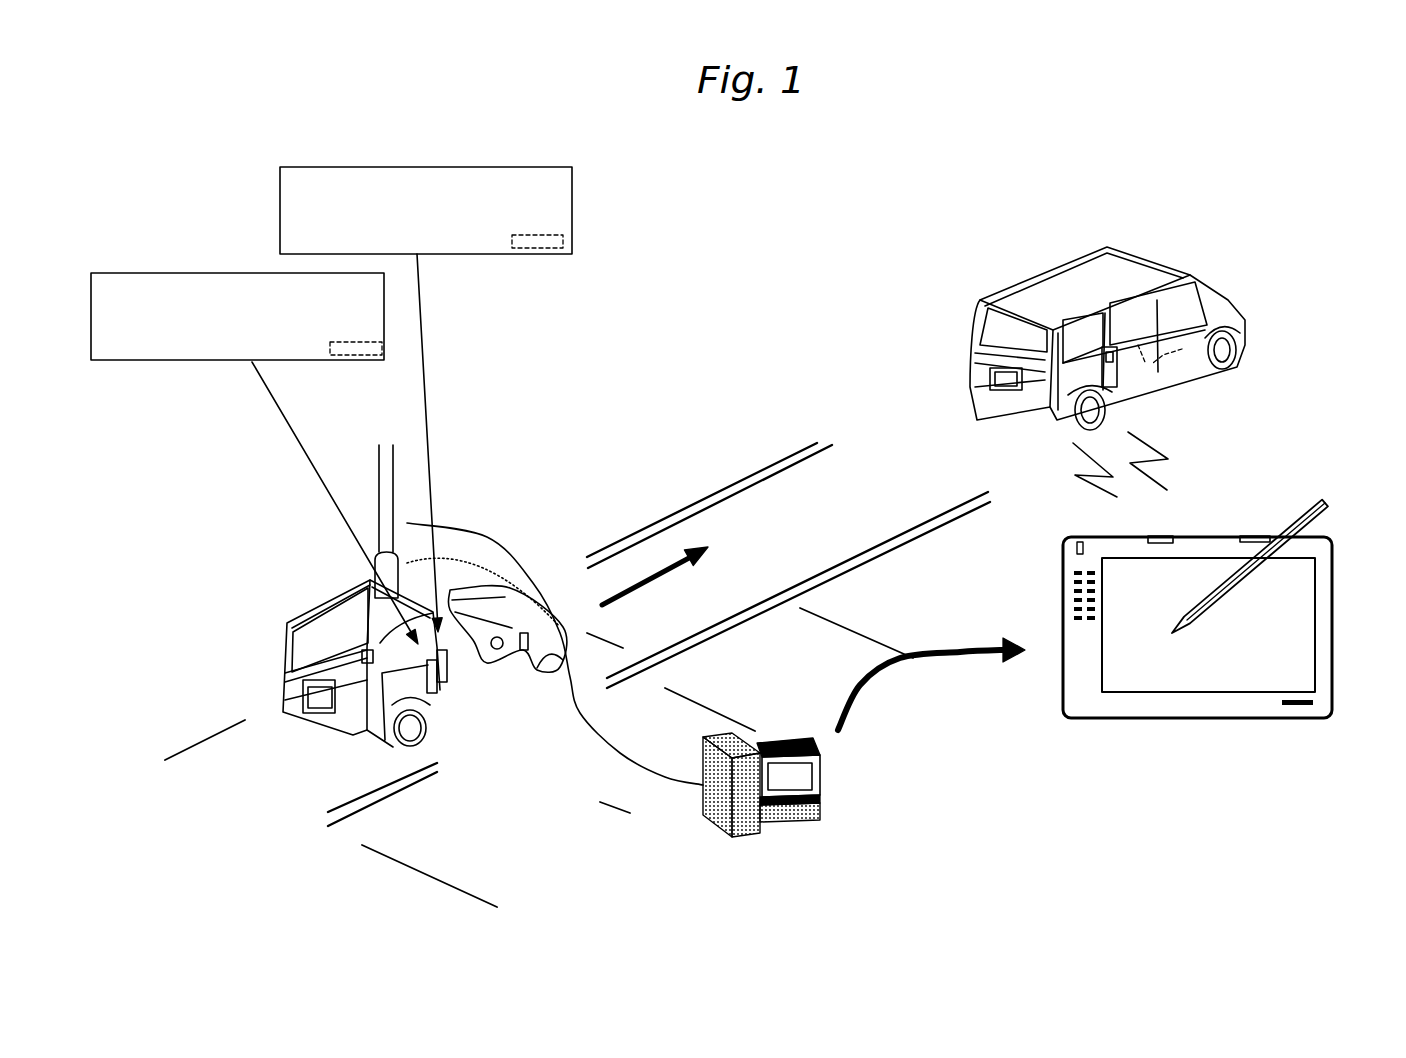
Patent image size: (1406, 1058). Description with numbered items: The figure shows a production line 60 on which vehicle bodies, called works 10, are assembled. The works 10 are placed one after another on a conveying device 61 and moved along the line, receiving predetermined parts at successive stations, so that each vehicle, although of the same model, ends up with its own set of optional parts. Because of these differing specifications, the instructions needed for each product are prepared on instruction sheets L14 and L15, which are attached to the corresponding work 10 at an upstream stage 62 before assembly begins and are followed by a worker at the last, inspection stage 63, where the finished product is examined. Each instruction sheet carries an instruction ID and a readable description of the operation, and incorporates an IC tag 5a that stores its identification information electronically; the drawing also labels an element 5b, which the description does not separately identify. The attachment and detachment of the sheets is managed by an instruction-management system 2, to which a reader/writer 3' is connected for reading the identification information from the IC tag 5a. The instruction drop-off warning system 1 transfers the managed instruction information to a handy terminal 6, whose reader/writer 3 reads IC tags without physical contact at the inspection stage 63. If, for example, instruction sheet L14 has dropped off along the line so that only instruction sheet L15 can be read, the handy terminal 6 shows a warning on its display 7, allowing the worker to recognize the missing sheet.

The instruction drop-off warning system 1 is at (1085, 790).
The instruction-management system 2 is at (773, 737).
The reader/writer 3 is at (1155, 623).
The reader/writer 3' is at (342, 521).
The IC tag 5a is at (516, 253).
The identification tag 5b is at (353, 732).
The handy terminal 6 is at (1322, 545).
The display 7 is at (1168, 667).
The work 10 is at (297, 612).
The production line 60 is at (665, 395).
The conveying device 61 is at (728, 513).
The upstream stage 62 is at (298, 787).
The inspection stage 63 is at (1230, 423).
The instruction sheet L14 is at (168, 280).
The instruction sheet L15 is at (385, 177).